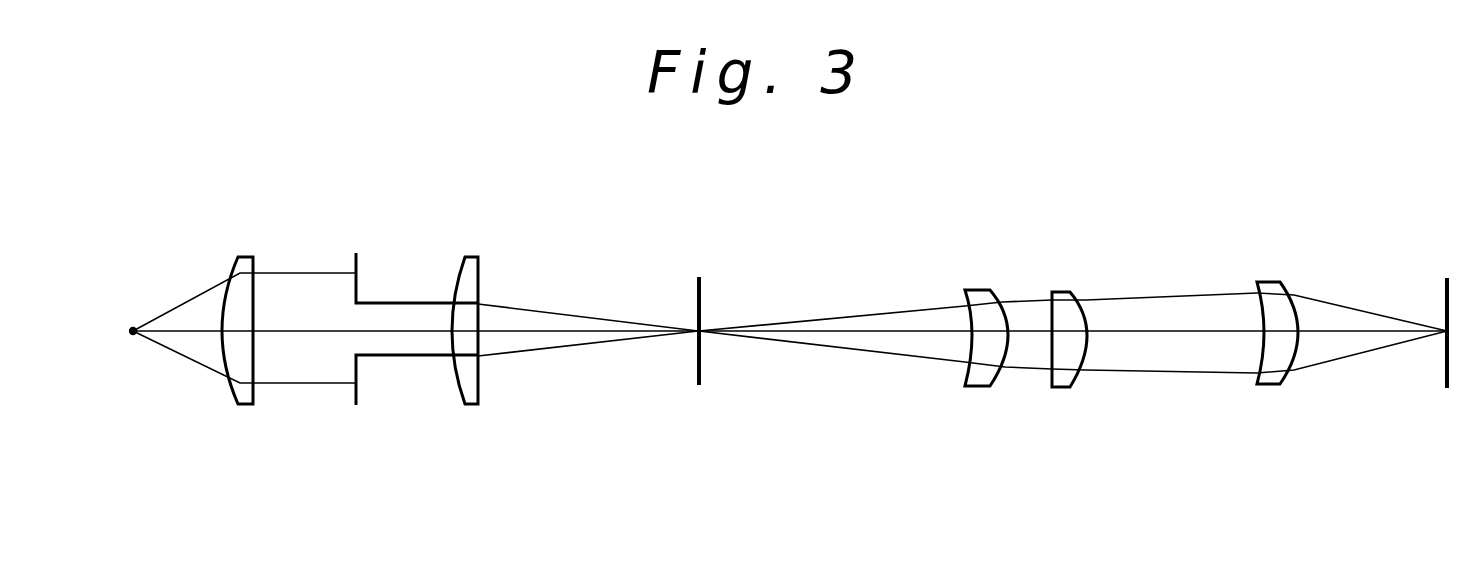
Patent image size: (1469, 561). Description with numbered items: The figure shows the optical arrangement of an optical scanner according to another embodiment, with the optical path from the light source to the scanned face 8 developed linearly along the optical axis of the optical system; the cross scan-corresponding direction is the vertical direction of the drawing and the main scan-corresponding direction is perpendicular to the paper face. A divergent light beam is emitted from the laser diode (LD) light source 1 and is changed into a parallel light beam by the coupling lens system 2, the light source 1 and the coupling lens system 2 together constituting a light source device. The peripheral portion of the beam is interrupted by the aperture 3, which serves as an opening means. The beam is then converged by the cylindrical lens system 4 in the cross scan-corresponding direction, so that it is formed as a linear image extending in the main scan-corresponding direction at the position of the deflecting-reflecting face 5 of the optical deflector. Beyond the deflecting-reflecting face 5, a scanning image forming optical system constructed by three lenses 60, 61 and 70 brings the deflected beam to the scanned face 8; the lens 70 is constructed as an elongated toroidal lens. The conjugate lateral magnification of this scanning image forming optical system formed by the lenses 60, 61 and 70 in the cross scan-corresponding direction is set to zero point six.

The laser diode light source 1 is at (133, 338).
The coupling lens system 2 is at (242, 406).
The aperture 3 is at (356, 407).
The cylindrical lens system 4 is at (468, 406).
The deflecting-reflecting face 5 is at (700, 383).
The lens 60 is at (973, 388).
The lens 61 is at (1062, 389).
The elongated toroidal lens 70 is at (1270, 386).
The scanned face 8 is at (1448, 390).